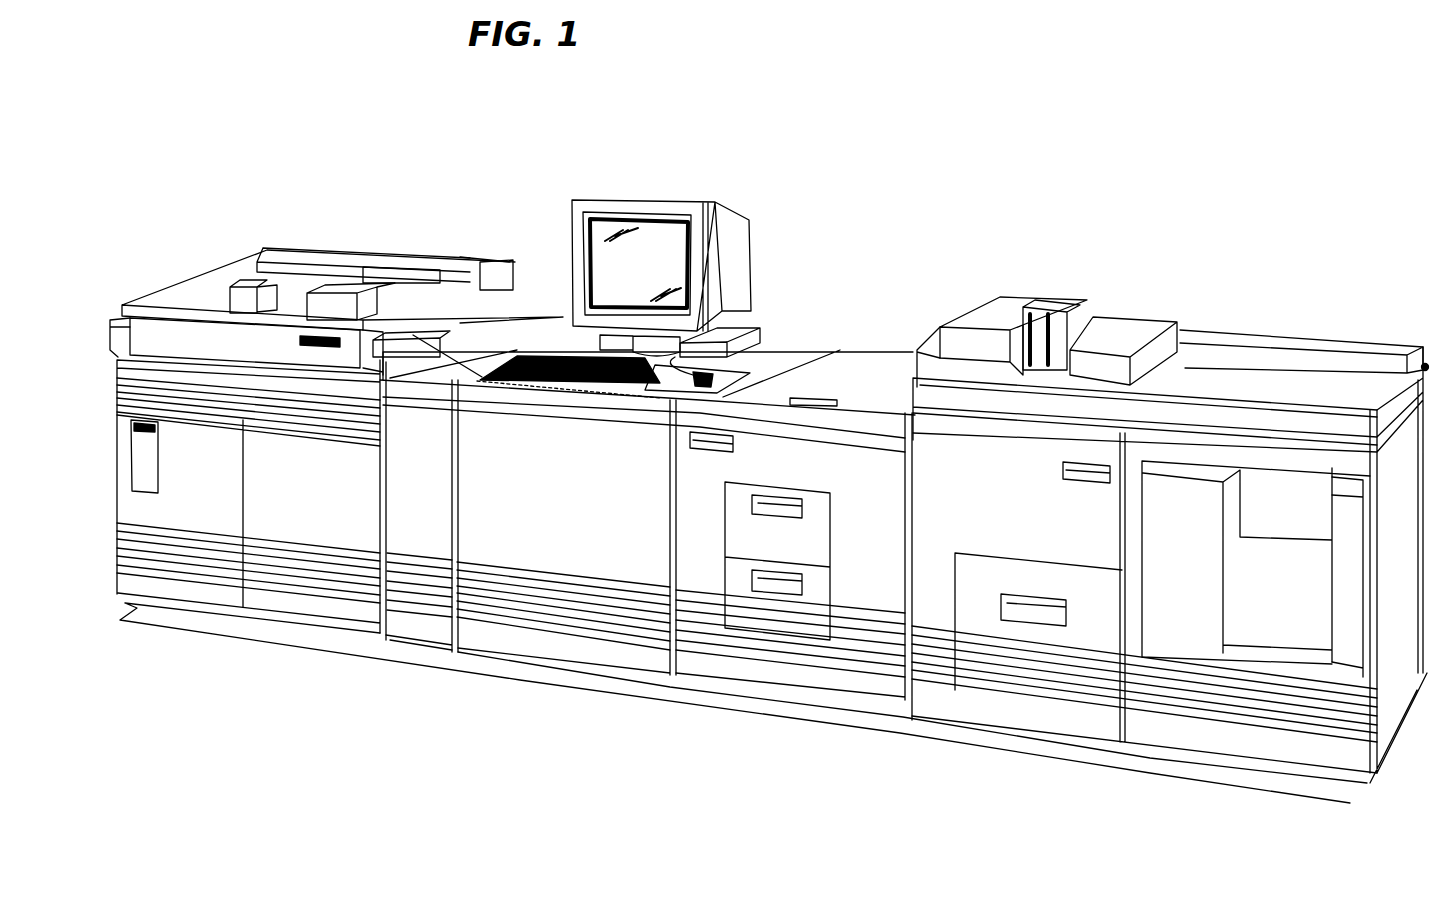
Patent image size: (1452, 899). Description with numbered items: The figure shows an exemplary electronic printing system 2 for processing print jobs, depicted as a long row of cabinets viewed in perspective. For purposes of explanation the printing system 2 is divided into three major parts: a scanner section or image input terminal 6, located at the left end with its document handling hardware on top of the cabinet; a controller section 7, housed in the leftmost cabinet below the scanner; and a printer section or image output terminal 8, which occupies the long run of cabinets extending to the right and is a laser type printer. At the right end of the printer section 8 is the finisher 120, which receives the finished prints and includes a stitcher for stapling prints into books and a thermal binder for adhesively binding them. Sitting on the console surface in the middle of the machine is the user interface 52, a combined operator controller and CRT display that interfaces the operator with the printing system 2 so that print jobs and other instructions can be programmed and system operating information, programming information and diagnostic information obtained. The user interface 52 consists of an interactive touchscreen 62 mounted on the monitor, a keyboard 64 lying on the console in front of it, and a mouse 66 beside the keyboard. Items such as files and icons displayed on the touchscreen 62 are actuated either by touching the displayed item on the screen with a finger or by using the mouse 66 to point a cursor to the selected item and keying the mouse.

The printing system 2 is at (894, 110).
The scanner section or image input terminal (IIT) 6 is at (366, 210).
The controller section 7 is at (101, 496).
The printer section or image output terminal (IOT) 8 is at (1372, 797).
The user interface (UI) 52 is at (665, 178).
The interactive touchscreen 62 is at (601, 271).
The keyboard 64 is at (554, 391).
The mouse 66 is at (658, 398).
The finisher 120 is at (1268, 296).